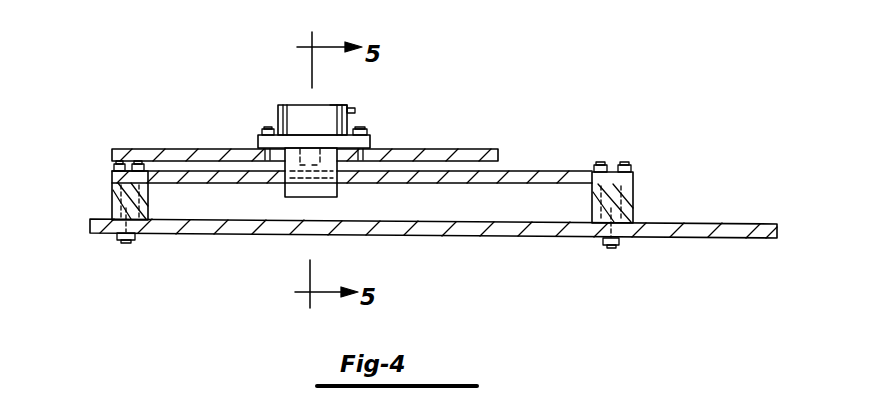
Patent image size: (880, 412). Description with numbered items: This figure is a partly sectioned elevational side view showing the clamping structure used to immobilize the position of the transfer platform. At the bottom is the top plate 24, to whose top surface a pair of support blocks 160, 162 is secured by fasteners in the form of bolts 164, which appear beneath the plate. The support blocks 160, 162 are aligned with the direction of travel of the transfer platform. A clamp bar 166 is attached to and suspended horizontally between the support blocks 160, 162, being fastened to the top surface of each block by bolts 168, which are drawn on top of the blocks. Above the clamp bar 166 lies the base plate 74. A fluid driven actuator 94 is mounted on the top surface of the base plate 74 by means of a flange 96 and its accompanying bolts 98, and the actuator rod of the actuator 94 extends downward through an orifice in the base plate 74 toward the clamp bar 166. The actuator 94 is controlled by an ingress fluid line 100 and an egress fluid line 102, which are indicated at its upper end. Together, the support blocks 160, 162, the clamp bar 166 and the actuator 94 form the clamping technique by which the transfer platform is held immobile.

The top plate 24 is at (713, 240).
The base plate 74 is at (453, 150).
The fluid driven actuator 94 is at (277, 110).
The flange 96 is at (375, 140).
The bolts 98 is at (268, 129).
The ingress fluid line 100 is at (355, 100).
The egress fluid line 102 is at (387, 100).
The support block 160 is at (633, 200).
The support block 162 is at (112, 203).
The bolts 164 is at (128, 244).
The clamp bar 166 is at (532, 172).
The bolts 168 is at (139, 162).